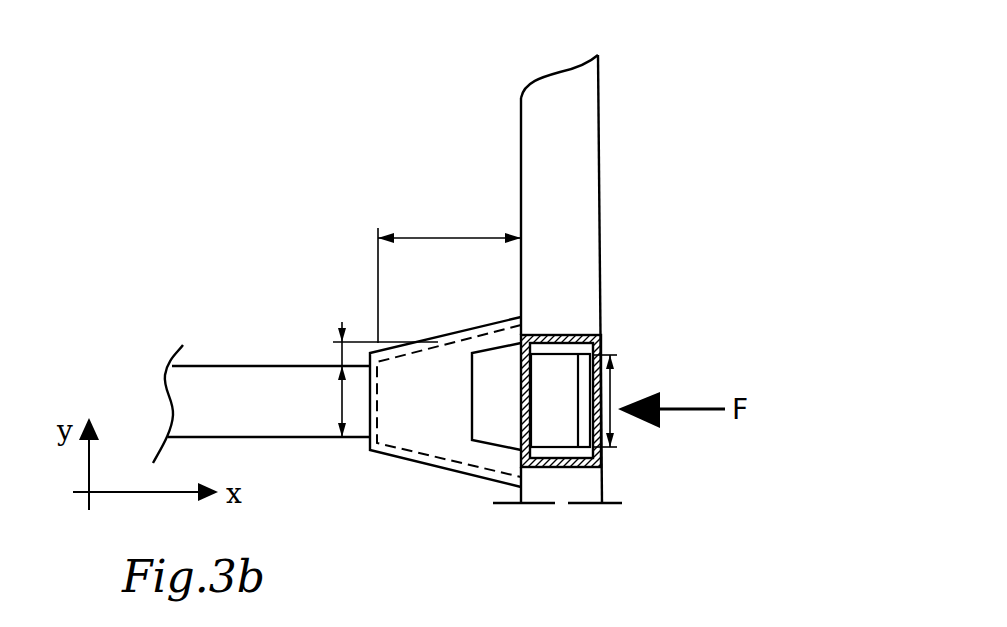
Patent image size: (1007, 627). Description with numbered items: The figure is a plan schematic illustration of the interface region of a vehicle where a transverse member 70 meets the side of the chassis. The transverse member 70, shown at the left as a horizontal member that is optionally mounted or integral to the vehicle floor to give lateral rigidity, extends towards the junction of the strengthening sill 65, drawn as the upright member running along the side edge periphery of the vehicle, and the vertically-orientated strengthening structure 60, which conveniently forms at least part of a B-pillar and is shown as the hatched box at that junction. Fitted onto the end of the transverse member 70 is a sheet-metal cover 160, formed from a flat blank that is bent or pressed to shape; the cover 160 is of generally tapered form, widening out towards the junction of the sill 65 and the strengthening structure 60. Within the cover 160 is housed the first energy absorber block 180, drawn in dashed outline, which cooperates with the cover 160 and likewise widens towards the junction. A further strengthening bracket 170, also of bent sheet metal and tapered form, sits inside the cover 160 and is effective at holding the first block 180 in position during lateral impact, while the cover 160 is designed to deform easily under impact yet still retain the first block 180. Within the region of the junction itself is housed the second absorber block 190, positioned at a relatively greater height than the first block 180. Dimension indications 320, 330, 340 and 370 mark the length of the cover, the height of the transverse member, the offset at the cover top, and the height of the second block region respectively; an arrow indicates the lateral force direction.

The strengthening structure 60 is at (567, 337).
The strengthening sill 65 is at (557, 222).
The transverse member 70 is at (238, 382).
The cover 160 is at (447, 335).
The strengthening bracket 170 is at (500, 397).
The first energy absorber block 180 is at (480, 337).
The second absorber block 190 is at (550, 427).
The length dimension 320 is at (418, 237).
The beam height dimension 330 is at (342, 410).
The offset dimension 340 is at (342, 353).
The receptacle height dimension 370 is at (613, 425).